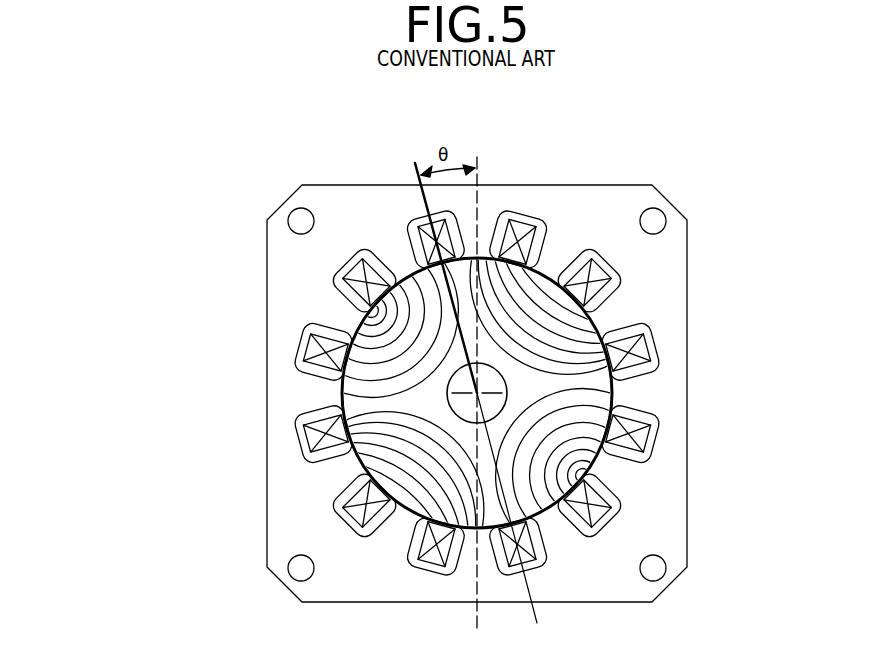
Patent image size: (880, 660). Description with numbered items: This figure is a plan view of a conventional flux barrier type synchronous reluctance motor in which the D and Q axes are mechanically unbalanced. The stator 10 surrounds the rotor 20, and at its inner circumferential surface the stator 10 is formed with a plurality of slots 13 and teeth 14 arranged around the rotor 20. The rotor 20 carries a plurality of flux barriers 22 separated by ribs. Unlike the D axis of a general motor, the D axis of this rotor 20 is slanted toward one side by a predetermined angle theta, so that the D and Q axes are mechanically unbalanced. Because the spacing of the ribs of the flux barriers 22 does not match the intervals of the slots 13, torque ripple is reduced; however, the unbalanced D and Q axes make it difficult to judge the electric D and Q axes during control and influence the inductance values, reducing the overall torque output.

The stator 10 is at (668, 257).
The slots 13 is at (612, 289).
The teeth 14 is at (615, 470).
The rotor 20 is at (343, 398).
The flux barriers 22 is at (378, 342).